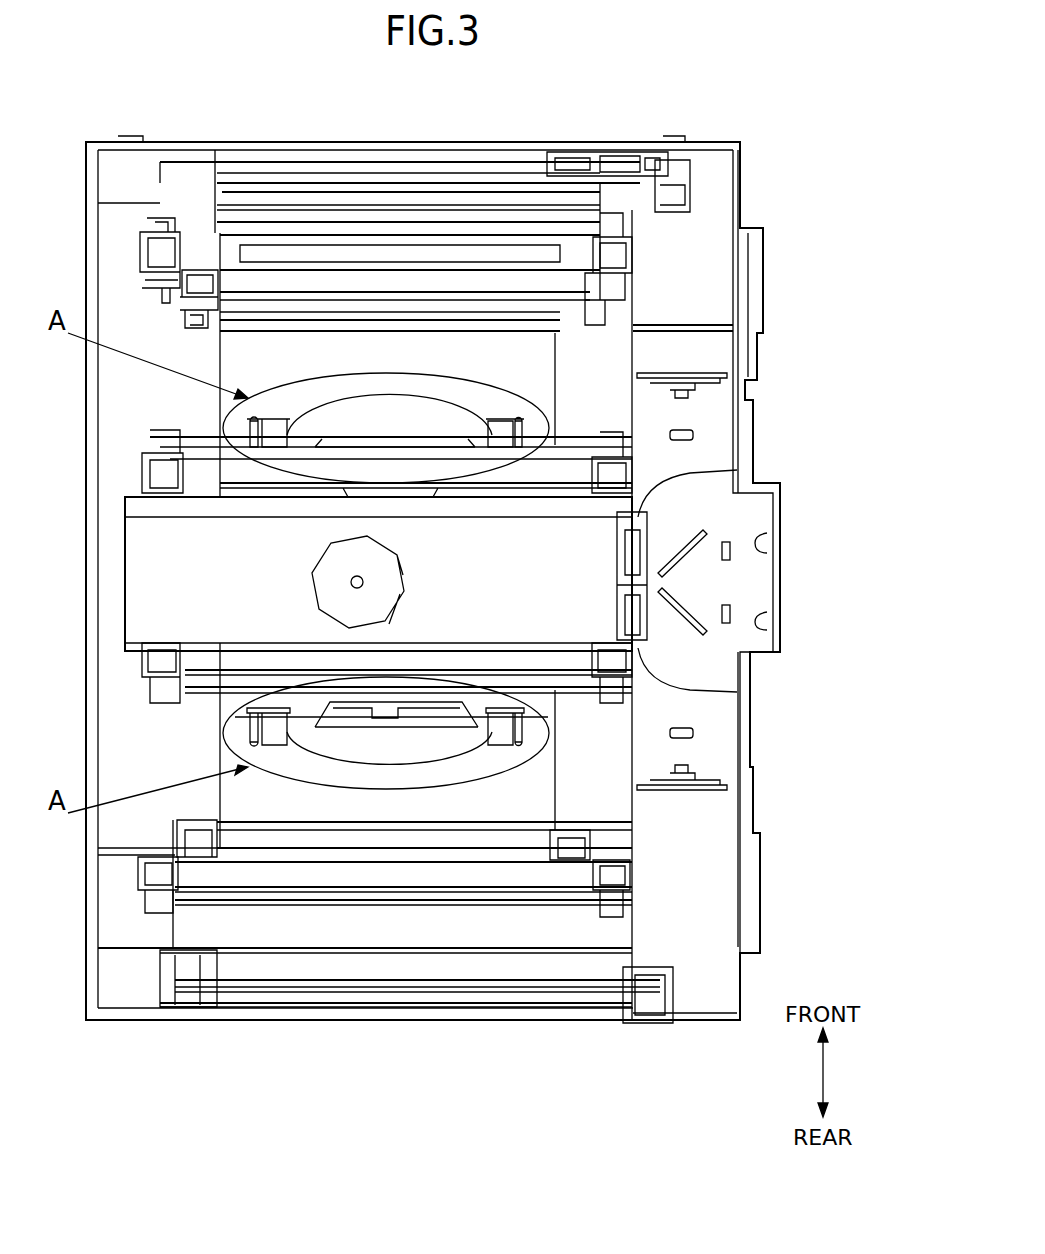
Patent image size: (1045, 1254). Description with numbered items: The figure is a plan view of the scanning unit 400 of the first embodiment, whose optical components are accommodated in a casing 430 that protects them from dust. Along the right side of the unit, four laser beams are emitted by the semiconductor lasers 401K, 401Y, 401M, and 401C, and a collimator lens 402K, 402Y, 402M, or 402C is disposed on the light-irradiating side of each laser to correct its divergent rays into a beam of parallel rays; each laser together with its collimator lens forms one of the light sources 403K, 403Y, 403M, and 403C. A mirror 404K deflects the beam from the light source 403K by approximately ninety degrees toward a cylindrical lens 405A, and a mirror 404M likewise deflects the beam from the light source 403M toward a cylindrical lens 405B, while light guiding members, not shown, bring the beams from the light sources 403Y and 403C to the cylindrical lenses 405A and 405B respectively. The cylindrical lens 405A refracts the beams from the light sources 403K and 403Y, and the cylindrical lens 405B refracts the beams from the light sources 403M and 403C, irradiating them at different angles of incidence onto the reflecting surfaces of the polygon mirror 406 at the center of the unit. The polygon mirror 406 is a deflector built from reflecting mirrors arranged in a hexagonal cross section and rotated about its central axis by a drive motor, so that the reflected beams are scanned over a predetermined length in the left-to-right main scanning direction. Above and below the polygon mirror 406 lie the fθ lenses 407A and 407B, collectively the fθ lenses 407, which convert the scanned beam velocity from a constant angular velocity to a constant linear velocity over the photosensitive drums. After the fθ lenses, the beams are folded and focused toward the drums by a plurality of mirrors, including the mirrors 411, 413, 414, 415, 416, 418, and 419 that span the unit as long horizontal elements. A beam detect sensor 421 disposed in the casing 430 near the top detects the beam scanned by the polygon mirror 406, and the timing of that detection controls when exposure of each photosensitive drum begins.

The scanning unit 400 is at (230, 128).
The semiconductor laser 401K is at (690, 392).
The collimator lens 402K is at (694, 435).
The light source 403K is at (827, 375).
The semiconductor laser 401Y is at (762, 540).
The collimator lens 402Y is at (733, 547).
The light source 403Y is at (852, 487).
The semiconductor laser 401C is at (762, 625).
The collimator lens 402C is at (733, 618).
The light source 403C is at (852, 620).
The semiconductor laser 401M is at (690, 771).
The collimator lens 402M is at (694, 734).
The light source 403M is at (827, 740).
The mirror 404K is at (687, 555).
The mirror 404M is at (687, 600).
The cylindrical lens 405A is at (735, 470).
The cylindrical lens 405B is at (737, 692).
The polygon mirror 406 is at (328, 575).
The fθ lens 407 is at (387, 463).
The fθ lens 407A is at (300, 412).
The fθ lens 407B is at (310, 745).
The mirror 411 is at (345, 290).
The mirror 413 is at (427, 168).
The mirror 414 is at (500, 250).
The mirror 415 is at (140, 848).
The mirror 416 is at (488, 845).
The mirror 418 is at (437, 995).
The mirror 419 is at (400, 875).
The beam detect (BD) sensor 421 is at (595, 160).
The casing 430 is at (700, 142).